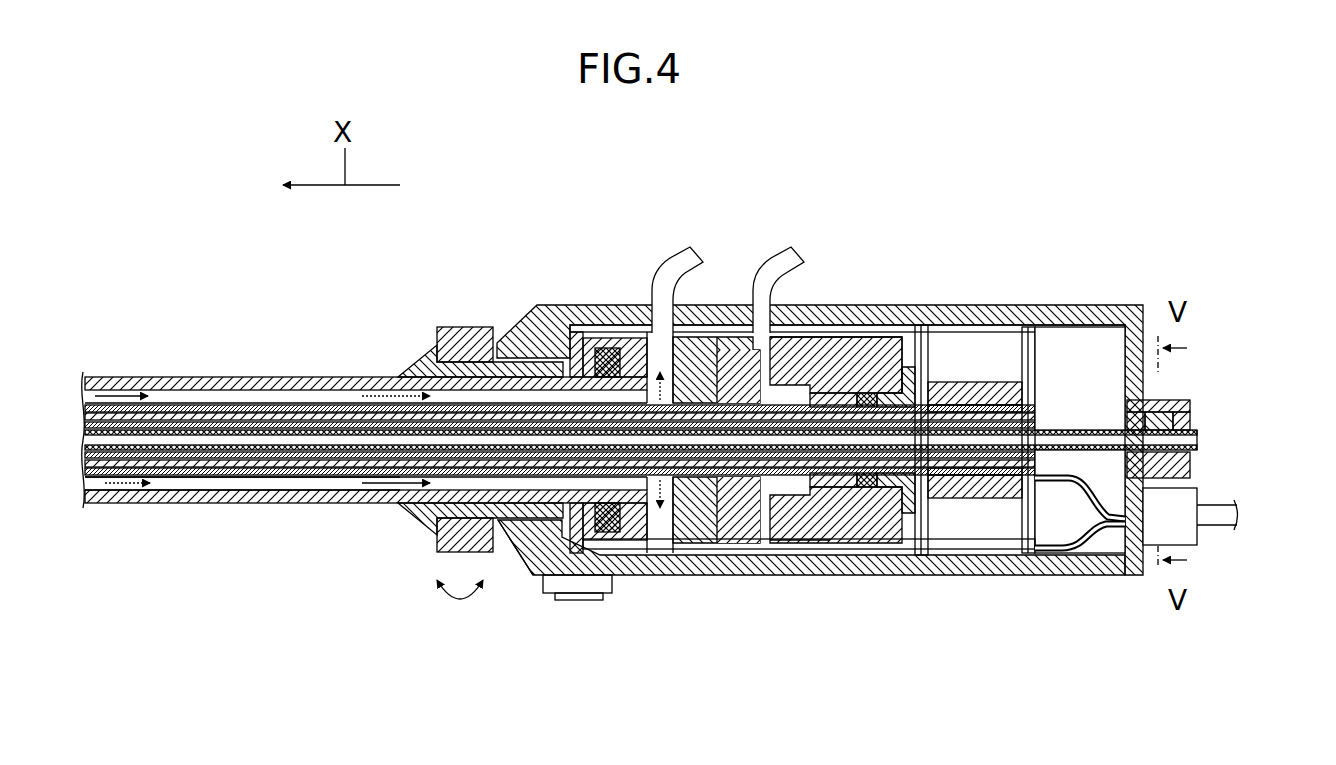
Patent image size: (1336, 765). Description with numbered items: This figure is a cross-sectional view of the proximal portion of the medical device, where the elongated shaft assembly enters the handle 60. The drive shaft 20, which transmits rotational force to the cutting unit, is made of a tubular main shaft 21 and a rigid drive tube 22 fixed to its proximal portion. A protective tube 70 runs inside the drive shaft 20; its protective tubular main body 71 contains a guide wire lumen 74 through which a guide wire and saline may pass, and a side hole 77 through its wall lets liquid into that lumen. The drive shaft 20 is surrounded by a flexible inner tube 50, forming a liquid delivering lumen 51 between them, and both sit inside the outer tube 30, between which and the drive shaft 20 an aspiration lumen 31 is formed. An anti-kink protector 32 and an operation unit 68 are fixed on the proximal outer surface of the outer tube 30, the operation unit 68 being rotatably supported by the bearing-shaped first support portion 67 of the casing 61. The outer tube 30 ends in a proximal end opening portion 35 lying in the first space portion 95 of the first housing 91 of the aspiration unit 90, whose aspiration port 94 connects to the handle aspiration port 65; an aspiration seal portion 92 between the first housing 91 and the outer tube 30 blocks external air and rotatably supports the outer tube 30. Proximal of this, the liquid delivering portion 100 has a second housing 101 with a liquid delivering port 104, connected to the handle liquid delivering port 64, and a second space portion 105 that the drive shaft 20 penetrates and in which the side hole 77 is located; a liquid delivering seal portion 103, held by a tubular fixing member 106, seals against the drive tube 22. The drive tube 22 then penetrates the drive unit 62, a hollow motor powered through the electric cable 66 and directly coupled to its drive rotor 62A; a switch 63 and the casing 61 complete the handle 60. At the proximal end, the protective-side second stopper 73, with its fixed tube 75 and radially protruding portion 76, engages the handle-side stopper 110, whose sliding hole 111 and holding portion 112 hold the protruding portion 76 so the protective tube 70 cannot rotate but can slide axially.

The drive shaft 20 is at (238, 415).
The main shaft 21 is at (192, 380).
The drive tube 22 is at (923, 330).
The outer tube 30 is at (700, 405).
The aspiration lumen 31 is at (292, 402).
The anti-kink protector 32 is at (413, 375).
The proximal end opening portion 35 is at (640, 395).
The inner tube 50 is at (343, 424).
The liquid delivering lumen 51 is at (312, 408).
The handle 60 is at (515, 262).
The casing 61 is at (728, 320).
The drive unit 62 is at (965, 390).
The drive rotor 62A is at (1000, 408).
The switch 63 is at (578, 602).
The liquid delivering port 64 is at (778, 258).
The aspiration port 65 is at (690, 255).
The electric cable 66 is at (1222, 522).
The first support portion 67 is at (525, 562).
The operation unit 68 is at (456, 328).
The protective tube 70 is at (343, 452).
The protective tubular main body 71 is at (262, 505).
The protective-side second stopper 73 is at (1192, 405).
The guide wire lumen 74 is at (304, 445).
The fixed tube 75 is at (1192, 465).
The protruding portion 76 is at (1165, 410).
The side hole 77 is at (777, 372).
The aspiration unit 90 is at (690, 535).
The first housing 91 is at (665, 532).
The aspiration seal portion 92 is at (588, 552).
The aspiration port 94 is at (660, 372).
The first space portion 95 is at (650, 538).
The liquid delivering portion 100 is at (827, 546).
The second housing 101 is at (815, 547).
The liquid delivering seal portion 103 is at (868, 392).
The liquid delivering port 104 is at (790, 335).
The second space portion 105 is at (795, 557).
The fixing member 106 is at (907, 547).
The handle-side stopper 110 is at (1232, 508).
The sliding hole 111 is at (1199, 446).
The holding portion 112 is at (1192, 418).